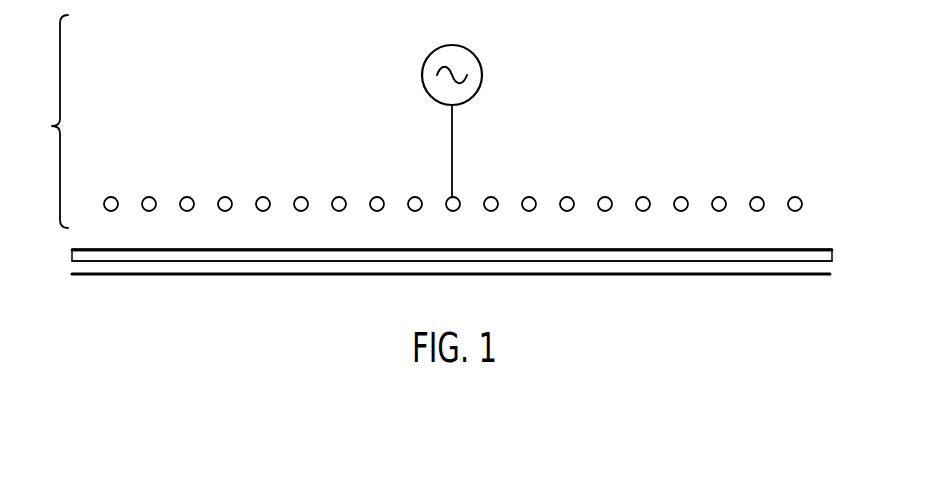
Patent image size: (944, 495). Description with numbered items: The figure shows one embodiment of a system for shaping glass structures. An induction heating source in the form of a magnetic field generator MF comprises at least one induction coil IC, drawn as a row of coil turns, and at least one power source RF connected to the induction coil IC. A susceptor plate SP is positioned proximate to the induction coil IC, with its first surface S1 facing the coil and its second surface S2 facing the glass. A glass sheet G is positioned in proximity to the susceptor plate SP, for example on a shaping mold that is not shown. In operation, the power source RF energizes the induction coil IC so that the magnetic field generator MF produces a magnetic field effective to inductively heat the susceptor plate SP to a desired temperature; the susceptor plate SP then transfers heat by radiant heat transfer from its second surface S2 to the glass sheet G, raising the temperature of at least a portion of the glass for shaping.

The magnetic field generator MF is at (40, 121).
The power source RF is at (475, 56).
The induction coil IC is at (531, 196).
The susceptor plate SP is at (72, 257).
The first surface S1 is at (818, 249).
The second surface S2 is at (818, 262).
The glass sheet G is at (190, 275).